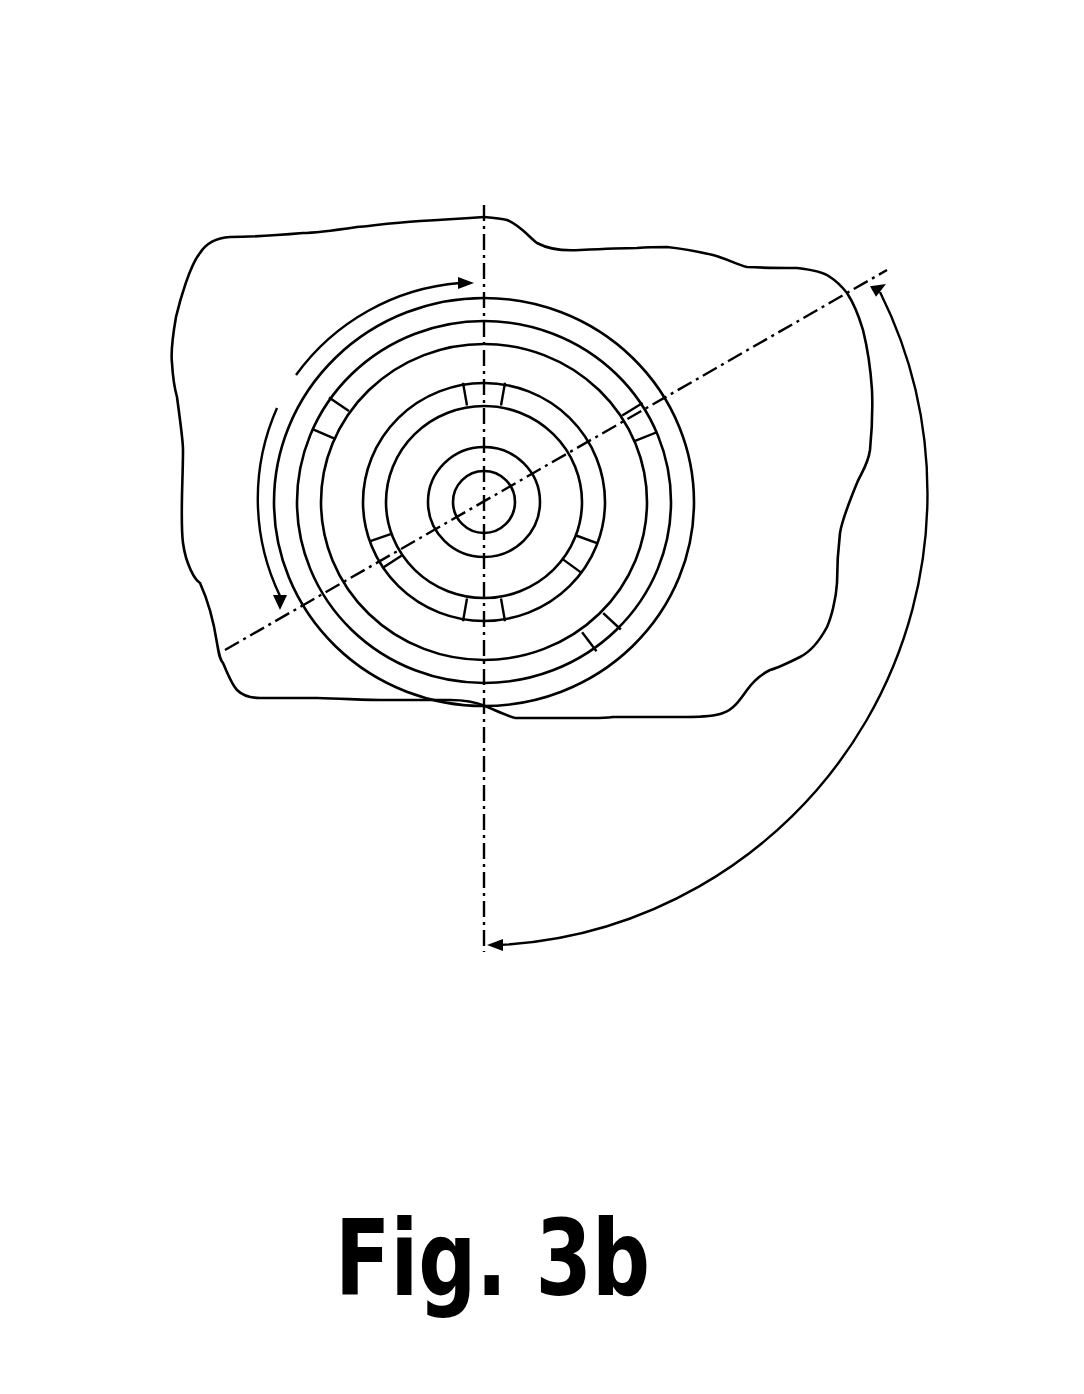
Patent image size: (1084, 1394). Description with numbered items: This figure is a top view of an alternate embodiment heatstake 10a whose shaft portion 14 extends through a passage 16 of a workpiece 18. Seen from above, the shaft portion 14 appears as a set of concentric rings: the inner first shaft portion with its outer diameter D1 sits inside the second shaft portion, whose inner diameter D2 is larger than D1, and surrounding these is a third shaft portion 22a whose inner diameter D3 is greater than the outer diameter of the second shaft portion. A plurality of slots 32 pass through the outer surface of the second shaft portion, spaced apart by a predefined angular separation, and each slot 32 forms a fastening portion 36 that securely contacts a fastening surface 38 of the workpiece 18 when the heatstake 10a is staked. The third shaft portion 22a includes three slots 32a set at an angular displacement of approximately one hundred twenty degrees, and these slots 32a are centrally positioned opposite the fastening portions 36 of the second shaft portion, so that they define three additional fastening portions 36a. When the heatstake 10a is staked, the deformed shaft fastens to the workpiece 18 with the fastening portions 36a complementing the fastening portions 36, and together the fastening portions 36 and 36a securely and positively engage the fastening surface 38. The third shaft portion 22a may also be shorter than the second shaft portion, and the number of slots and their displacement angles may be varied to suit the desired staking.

The heatstake 10a is at (243, 133).
The workpiece 18 is at (208, 233).
The fastening surface 38 is at (730, 285).
The shaft portion 14 is at (577, 403).
The fastening portion 36 is at (613, 392).
The fastening portion 36a is at (487, 340).
The slot 32 is at (490, 390).
The slot 32a is at (640, 423).
The passage 16 is at (620, 535).
The third shaft portion 22a is at (383, 700).
The outer diameter D1 is at (563, 488).
The inner diameter D2 is at (571, 420).
The inner diameter D3 is at (404, 672).